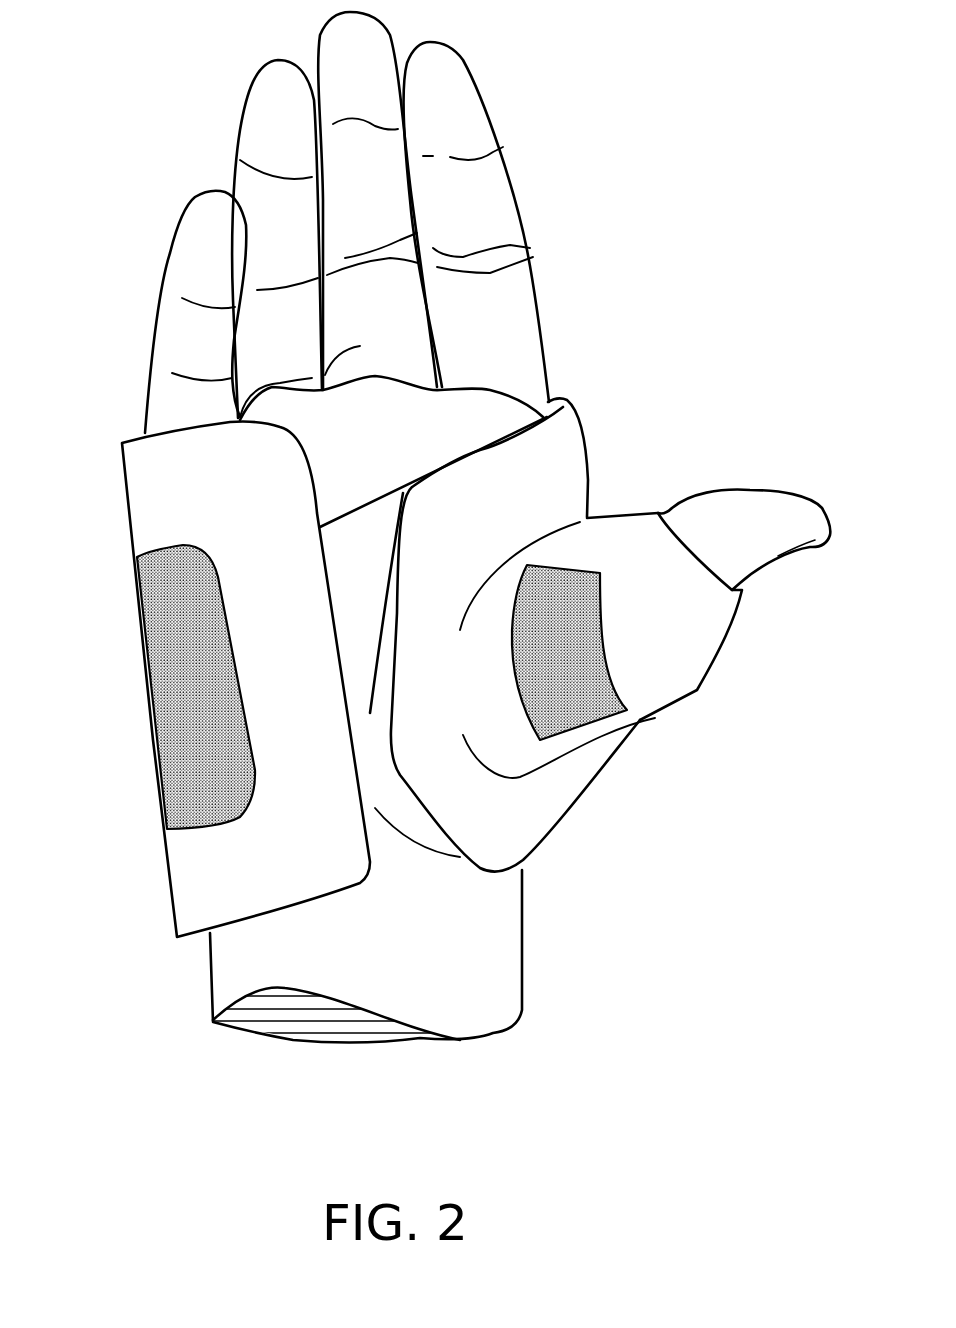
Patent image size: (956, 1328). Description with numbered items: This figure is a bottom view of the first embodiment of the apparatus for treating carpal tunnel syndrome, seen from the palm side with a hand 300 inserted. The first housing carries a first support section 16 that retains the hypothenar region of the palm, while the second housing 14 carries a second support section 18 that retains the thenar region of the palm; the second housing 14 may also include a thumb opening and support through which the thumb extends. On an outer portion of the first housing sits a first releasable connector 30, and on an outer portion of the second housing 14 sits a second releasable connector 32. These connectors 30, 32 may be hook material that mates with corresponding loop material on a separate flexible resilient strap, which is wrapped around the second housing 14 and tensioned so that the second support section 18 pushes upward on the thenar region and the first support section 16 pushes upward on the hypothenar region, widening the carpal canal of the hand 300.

The second housing 14 is at (557, 790).
The first support section 16 is at (233, 860).
The second support section 18 is at (690, 577).
The first releasable connector 30 is at (183, 697).
The second releasable connector 32 is at (547, 608).
The hand 300 is at (243, 957).